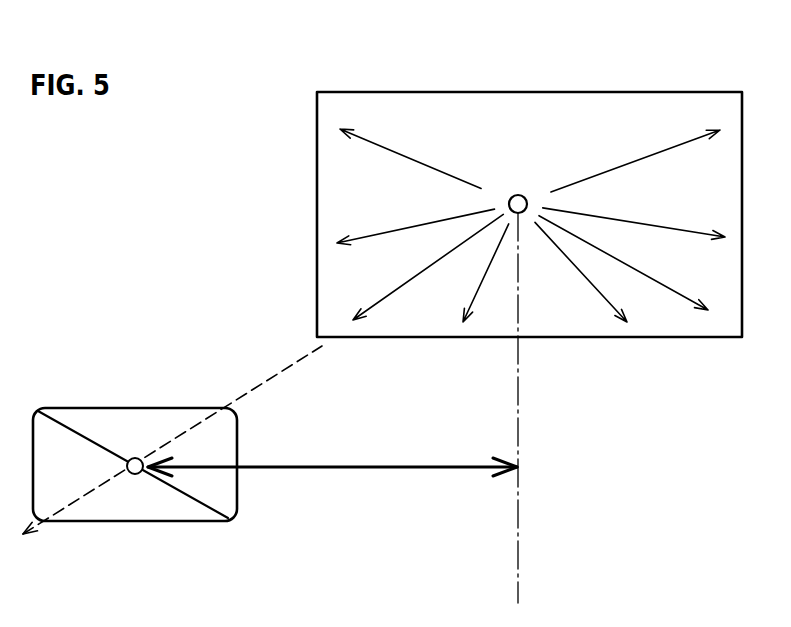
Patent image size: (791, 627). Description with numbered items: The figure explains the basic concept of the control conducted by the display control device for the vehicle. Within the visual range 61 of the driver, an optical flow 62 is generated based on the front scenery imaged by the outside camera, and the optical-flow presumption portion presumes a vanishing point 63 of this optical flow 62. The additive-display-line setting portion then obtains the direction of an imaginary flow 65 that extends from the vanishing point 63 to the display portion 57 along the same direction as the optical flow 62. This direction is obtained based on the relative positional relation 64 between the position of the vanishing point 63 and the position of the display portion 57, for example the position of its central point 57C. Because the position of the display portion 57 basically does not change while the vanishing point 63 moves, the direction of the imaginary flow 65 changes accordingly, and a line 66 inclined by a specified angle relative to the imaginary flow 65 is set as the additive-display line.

The visual range 61 is at (670, 92).
The optical flow 62 is at (372, 233).
The vanishing point 63 is at (518, 193).
The relative positional relation 64 is at (390, 465).
The imaginary flow 65 is at (78, 502).
The diagonal line 66 is at (80, 433).
The display portion 57 is at (193, 408).
The central point 57C is at (134, 457).